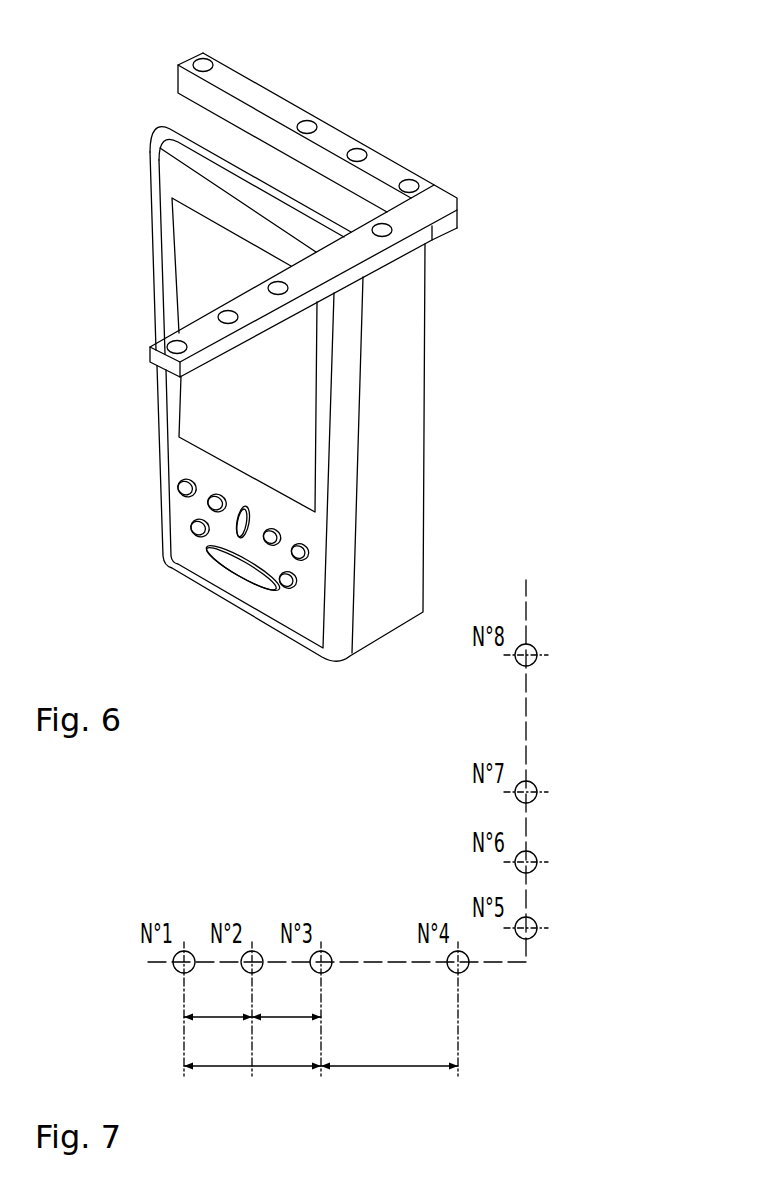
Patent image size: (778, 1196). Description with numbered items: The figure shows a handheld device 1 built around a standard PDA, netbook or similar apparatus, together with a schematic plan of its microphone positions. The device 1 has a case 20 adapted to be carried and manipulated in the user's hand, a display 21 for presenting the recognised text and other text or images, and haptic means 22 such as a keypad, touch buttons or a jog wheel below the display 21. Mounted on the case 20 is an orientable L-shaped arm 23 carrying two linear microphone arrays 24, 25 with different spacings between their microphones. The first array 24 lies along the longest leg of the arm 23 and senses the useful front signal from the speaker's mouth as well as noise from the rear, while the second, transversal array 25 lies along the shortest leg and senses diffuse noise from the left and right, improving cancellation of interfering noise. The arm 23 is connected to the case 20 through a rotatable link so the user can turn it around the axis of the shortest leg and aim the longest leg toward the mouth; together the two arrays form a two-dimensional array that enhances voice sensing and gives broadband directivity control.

The device 1 is at (300, 429).
The housing 20 is at (412, 515).
The display 21 is at (258, 396).
The haptic means 22 is at (192, 530).
The L-shaped arm 23 is at (285, 208).
The first array of microphones 24 is at (410, 179).
The second array of microphones 25 is at (390, 236).